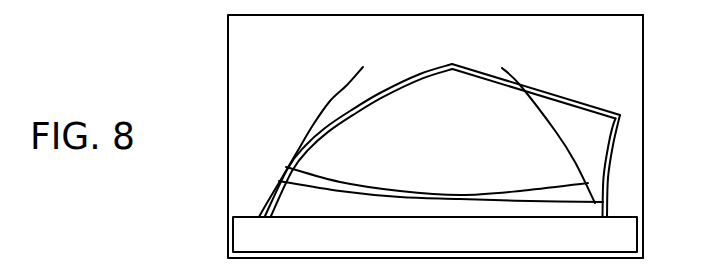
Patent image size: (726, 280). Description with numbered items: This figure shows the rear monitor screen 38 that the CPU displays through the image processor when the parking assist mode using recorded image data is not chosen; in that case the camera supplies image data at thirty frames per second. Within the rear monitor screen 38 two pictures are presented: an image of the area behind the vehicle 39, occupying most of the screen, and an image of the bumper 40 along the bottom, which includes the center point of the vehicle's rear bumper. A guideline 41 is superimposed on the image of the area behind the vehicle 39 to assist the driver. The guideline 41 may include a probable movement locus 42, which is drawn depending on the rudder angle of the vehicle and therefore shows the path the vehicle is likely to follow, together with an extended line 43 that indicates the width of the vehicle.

The rear monitor screen 38 is at (228, 47).
The image of the area behind the vehicle 39 is at (637, 161).
The image of the bumper 40 is at (241, 233).
The guideline 41 is at (358, 68).
The probable movement locus 42 is at (563, 97).
The extended line 43 is at (330, 100).